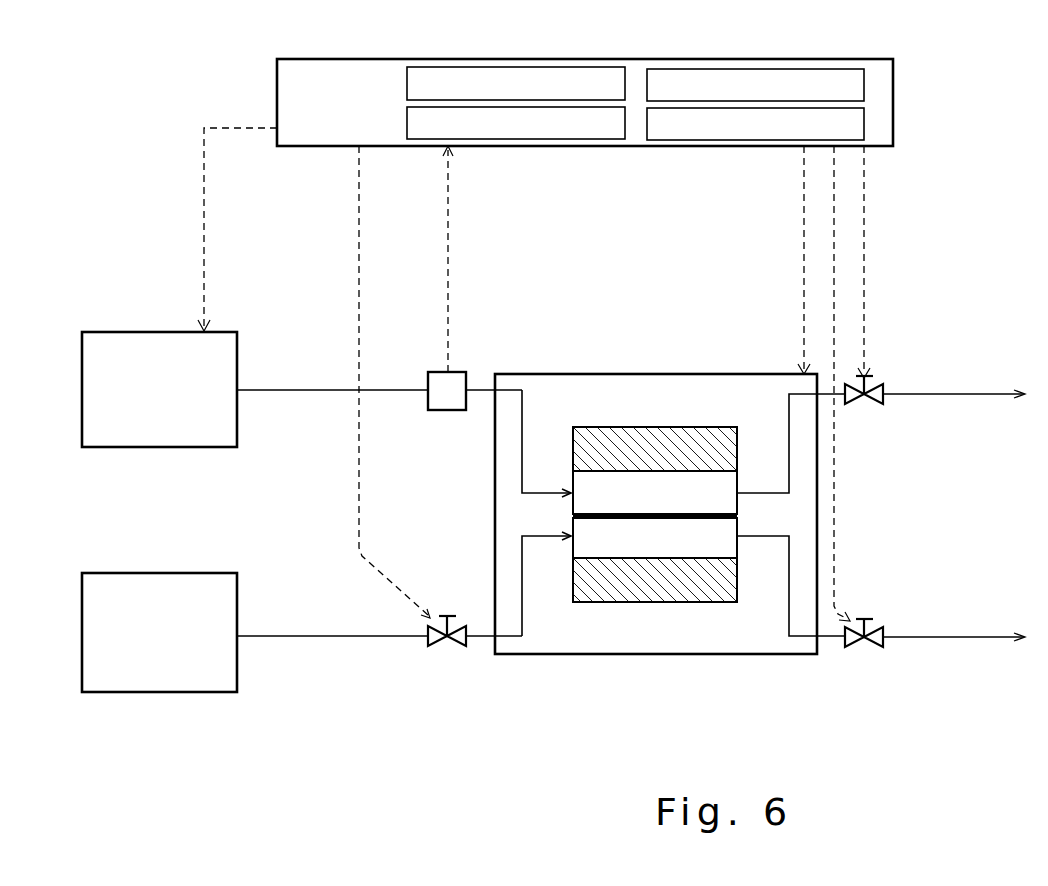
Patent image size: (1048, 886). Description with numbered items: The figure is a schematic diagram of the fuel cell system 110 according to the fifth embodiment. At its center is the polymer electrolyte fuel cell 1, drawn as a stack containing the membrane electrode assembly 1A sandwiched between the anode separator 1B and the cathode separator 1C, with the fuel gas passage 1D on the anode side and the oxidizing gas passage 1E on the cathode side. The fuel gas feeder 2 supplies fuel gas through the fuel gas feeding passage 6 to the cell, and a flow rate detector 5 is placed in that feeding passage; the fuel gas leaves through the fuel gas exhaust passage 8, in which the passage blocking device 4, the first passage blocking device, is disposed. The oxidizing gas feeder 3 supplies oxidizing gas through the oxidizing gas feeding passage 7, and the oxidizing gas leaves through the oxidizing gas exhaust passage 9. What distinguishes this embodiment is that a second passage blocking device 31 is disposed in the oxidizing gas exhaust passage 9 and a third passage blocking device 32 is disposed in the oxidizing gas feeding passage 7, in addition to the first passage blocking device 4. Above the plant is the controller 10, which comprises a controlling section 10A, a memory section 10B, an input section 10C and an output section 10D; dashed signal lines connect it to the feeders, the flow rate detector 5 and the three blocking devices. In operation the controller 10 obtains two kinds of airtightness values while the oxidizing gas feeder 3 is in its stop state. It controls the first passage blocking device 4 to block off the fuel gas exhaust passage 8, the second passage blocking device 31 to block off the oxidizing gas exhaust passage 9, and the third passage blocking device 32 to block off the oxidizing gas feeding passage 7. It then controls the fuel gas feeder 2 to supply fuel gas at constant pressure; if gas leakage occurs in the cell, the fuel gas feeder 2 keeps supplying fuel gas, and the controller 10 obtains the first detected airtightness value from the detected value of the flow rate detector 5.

The fuel cell system 110 is at (121, 155).
The controller 10 is at (272, 72).
The controlling section 10A is at (512, 143).
The memory section 10B is at (508, 58).
The input section 10C is at (752, 143).
The output section 10D is at (749, 60).
The polymer electrolyte fuel cell (PEFC) 1 is at (766, 370).
The membrane electrode assembly 1A is at (702, 518).
The anode separator 1B is at (617, 492).
The cathode separator 1C is at (663, 580).
The fuel gas passage 1D is at (707, 425).
The oxidizing gas passage 1E is at (619, 538).
The fuel gas feeder 2 is at (80, 366).
The oxidizing gas feeder 3 is at (80, 655).
The passage blocking device (first passage blocking device) 4 is at (876, 385).
The flow rate detector 5 is at (445, 412).
The fuel gas feeding passage 6 is at (275, 388).
The oxidizing gas feeding passage 7 is at (275, 640).
The fuel gas exhaust passage 8 is at (977, 390).
The oxidizing gas exhaust passage 9 is at (977, 645).
The second passage blocking device 31 is at (859, 648).
The third passage blocking device 32 is at (441, 649).